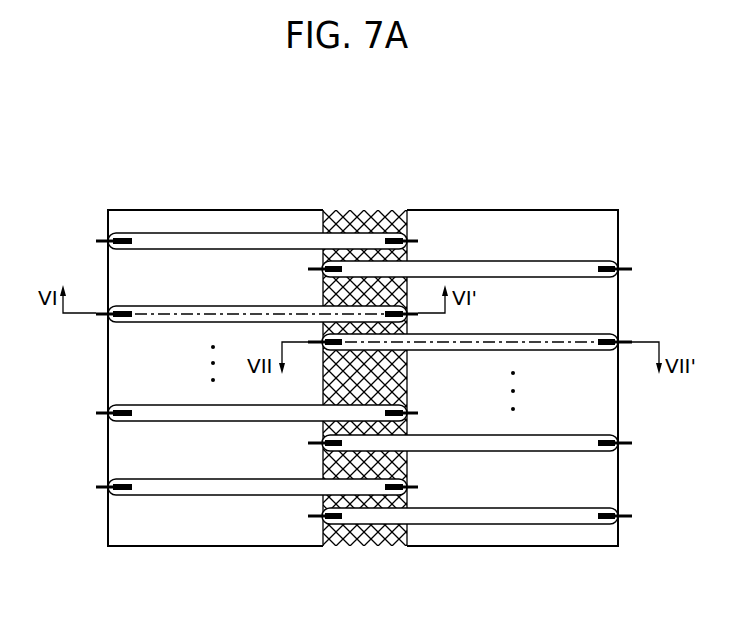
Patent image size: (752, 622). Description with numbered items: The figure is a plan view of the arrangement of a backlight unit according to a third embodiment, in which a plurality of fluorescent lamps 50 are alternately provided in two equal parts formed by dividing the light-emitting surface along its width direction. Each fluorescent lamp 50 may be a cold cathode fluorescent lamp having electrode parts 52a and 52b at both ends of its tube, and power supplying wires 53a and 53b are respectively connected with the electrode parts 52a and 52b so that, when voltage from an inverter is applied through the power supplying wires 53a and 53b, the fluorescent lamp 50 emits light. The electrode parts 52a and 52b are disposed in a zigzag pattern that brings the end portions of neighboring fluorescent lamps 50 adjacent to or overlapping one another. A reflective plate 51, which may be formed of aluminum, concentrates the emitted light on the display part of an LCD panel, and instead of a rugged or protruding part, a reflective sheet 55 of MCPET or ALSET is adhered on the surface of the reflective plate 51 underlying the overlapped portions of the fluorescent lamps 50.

The fluorescent lamp 50 is at (243, 237).
The reflective plate 51 is at (557, 222).
The electrode part 52a is at (114, 250).
The electrode part 52b is at (379, 235).
The power supplying wire 53a is at (110, 238).
The power supplying wire 53b is at (414, 238).
The reflective sheet 55 is at (372, 548).